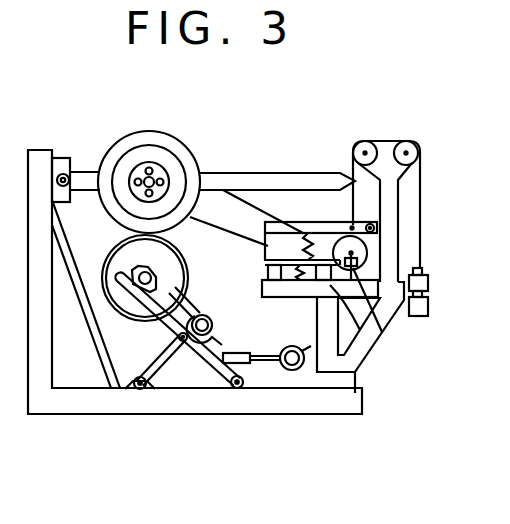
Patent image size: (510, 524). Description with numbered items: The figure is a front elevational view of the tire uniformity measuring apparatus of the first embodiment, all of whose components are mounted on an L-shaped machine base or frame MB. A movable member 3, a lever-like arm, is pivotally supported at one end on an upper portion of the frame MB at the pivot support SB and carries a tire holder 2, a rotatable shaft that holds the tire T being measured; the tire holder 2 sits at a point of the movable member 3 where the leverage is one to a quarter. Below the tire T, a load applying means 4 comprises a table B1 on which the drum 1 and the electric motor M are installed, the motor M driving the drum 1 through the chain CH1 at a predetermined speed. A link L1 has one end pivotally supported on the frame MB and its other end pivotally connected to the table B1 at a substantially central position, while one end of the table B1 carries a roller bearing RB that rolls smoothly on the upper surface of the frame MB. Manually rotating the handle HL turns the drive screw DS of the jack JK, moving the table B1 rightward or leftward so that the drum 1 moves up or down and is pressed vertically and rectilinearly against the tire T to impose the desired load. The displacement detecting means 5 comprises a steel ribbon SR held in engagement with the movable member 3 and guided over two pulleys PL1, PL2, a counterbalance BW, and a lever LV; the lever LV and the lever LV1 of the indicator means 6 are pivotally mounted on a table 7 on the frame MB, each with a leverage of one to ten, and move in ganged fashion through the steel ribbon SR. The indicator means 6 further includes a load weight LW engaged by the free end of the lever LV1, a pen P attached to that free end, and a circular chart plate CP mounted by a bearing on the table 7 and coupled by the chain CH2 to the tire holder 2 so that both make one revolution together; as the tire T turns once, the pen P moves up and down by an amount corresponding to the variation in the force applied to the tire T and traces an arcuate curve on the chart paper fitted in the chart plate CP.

The tire T is at (172, 142).
The support bracket SB is at (78, 168).
The tire holder 2 is at (163, 174).
The movable member 3 is at (273, 182).
The drum 1 is at (104, 274).
The chain CH1 is at (196, 276).
The chain CH2 is at (238, 236).
The electric motor M is at (209, 318).
The link L1 is at (162, 364).
The table B1 is at (165, 366).
The pivot RB is at (232, 390).
The jack JK is at (237, 353).
The drive screw DS is at (267, 362).
The handle HL is at (296, 370).
The load applying means 4 is at (244, 443).
The machine base MB is at (55, 392).
The lever LV is at (317, 228).
The lever LV1 is at (291, 288).
The circular chart plate CP is at (362, 276).
The steel ribbon SR is at (354, 204).
The pulley PL1 is at (365, 148).
The pulley PL2 is at (408, 148).
The displacement detecting means 5 is at (432, 219).
The counterbalance BW is at (429, 283).
The indicator means 6 is at (414, 346).
The table 7 is at (359, 326).
The pen P is at (374, 309).
The load weight LW is at (360, 330).